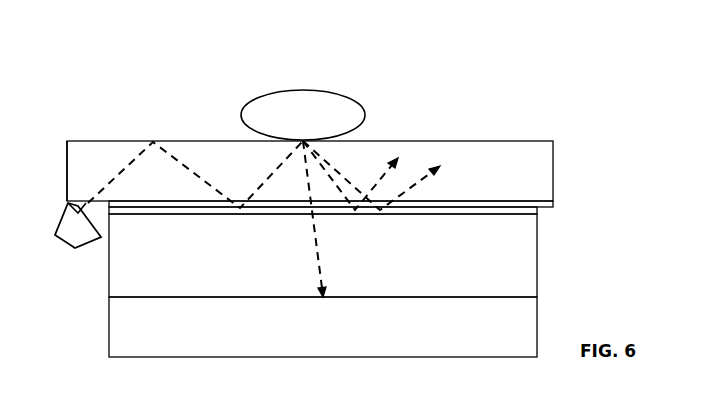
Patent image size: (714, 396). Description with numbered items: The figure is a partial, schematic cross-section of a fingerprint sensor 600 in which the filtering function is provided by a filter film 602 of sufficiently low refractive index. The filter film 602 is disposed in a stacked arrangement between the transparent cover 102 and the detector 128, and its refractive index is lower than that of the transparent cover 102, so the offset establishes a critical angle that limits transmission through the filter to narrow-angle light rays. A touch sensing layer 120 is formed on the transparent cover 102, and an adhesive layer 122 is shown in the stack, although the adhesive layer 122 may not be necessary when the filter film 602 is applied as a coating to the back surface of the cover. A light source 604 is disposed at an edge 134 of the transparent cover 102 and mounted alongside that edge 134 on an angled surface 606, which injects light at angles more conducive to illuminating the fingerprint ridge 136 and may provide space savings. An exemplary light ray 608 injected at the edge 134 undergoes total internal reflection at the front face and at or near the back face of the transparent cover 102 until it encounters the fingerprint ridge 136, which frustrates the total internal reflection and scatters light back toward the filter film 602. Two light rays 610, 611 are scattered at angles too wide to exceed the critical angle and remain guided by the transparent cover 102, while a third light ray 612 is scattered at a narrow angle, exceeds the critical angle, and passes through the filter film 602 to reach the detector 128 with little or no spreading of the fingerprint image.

The fingerprint sensor 600 is at (463, 88).
The transparent cover 102 is at (310, 171).
The edge 134 is at (67, 157).
The fingerprint ridge 136 is at (303, 115).
The touch sensing layer 120 is at (553, 207).
The adhesive layer 122 is at (538, 213).
The filter film 602 is at (323, 255).
The detector 128 is at (323, 327).
The light source 604 is at (78, 250).
The angled surface 606 is at (104, 240).
The light ray 608 is at (112, 178).
The light ray 610 is at (326, 163).
The light ray 611 is at (340, 200).
The light ray 612 is at (314, 229).